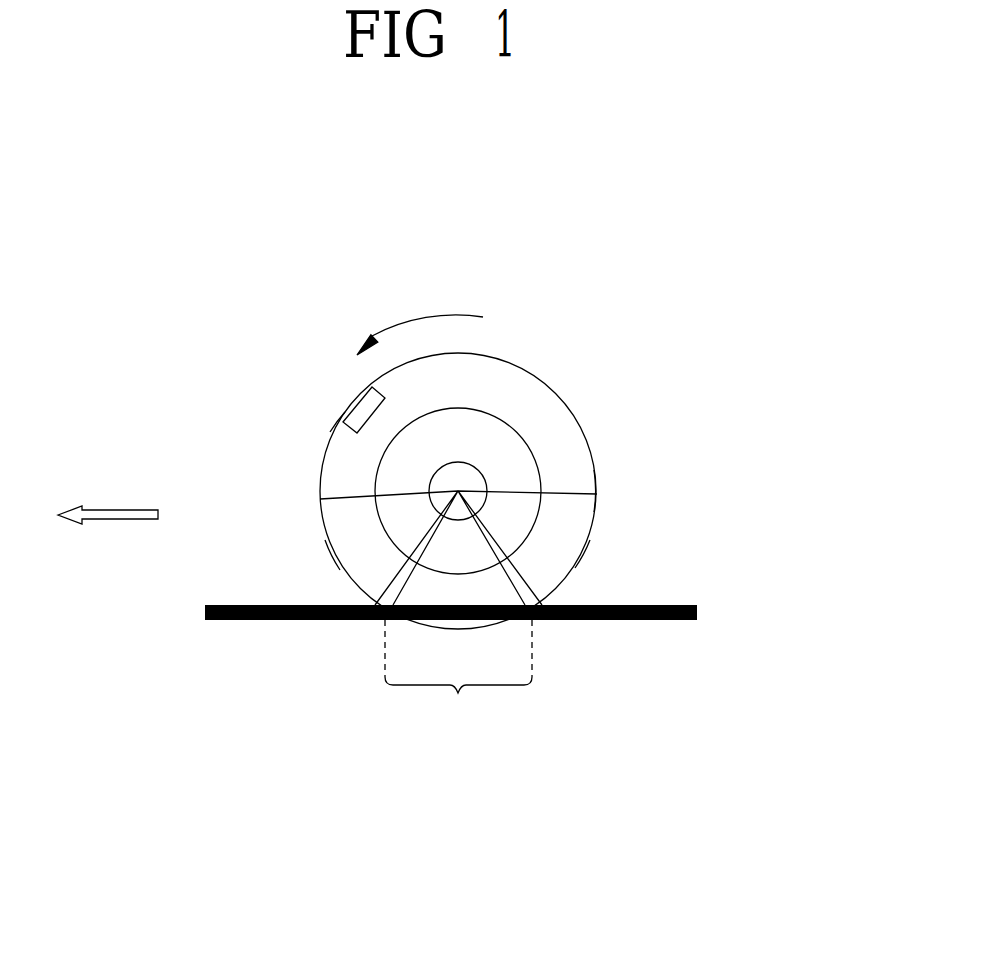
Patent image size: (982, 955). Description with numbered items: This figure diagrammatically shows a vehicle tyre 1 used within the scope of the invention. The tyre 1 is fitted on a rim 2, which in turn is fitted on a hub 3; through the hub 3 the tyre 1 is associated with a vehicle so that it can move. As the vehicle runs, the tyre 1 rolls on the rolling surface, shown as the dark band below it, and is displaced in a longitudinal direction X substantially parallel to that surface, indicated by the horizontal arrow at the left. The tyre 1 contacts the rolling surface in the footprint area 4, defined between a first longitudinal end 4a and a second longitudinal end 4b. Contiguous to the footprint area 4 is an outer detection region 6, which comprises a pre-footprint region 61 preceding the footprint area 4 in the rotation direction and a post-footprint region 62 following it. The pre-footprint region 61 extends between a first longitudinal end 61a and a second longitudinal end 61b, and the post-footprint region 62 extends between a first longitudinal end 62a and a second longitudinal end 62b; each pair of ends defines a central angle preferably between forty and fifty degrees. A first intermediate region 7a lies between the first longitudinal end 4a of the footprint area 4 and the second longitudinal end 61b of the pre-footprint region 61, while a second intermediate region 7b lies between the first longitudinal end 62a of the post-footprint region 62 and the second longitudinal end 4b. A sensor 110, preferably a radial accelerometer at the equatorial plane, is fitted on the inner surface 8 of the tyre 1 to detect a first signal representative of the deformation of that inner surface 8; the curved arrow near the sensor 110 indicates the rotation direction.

The tyre 1 is at (541, 378).
The rim 2 is at (529, 448).
The hub 3 is at (462, 475).
The footprint area 4 is at (458, 700).
The first longitudinal end 4a is at (383, 621).
The second longitudinal end 4b is at (532, 621).
The outer detection region 6 is at (317, 517).
The first intermediate region 7a is at (383, 589).
The second intermediate region 7b is at (531, 590).
The inner surface 8 is at (318, 497).
The pre-footprint region 61 is at (327, 545).
The first longitudinal end 61a is at (330, 444).
The second longitudinal end 61b is at (322, 621).
The post-footprint region 62 is at (578, 557).
The first longitudinal end 62a is at (605, 619).
The second longitudinal end 62b is at (597, 497).
The sensor 110 is at (350, 403).
The longitudinal direction X is at (103, 508).